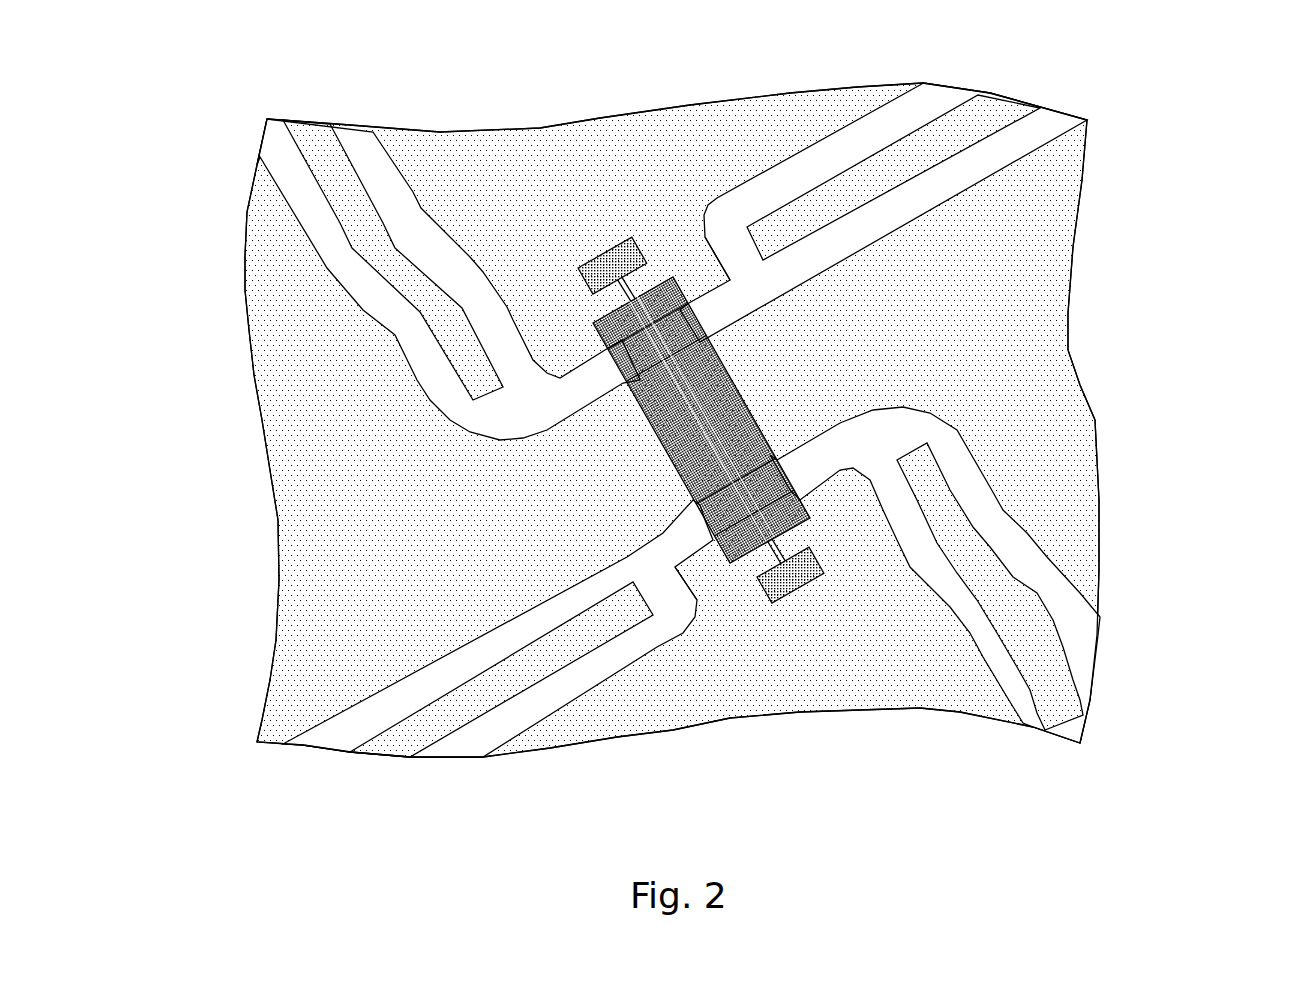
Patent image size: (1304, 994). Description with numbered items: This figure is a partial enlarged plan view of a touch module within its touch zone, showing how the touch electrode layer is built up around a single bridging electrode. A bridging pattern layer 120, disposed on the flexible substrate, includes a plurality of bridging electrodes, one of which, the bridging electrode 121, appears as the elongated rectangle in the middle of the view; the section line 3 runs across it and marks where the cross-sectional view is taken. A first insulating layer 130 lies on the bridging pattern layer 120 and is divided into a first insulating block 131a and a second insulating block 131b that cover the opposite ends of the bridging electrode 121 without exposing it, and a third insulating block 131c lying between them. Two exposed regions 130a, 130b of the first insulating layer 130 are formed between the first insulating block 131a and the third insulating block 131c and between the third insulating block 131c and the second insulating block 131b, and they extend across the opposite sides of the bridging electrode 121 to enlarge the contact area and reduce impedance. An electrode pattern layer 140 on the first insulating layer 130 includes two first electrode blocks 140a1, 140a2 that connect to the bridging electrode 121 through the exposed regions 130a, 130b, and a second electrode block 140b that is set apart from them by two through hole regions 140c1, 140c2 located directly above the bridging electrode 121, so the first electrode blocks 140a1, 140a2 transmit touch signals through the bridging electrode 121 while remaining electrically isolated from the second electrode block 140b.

The line 3- 3 is at (594, 231).
The bridging pattern layer 120 is at (756, 420).
The bridging electrode 121 is at (708, 395).
The first insulating layer 130 is at (626, 421).
The exposed region 130a is at (603, 304).
The exposed region 130b is at (802, 537).
The first insulating block 131a is at (579, 268).
The second insulating block 131b is at (797, 607).
The third insulating block 131c is at (705, 366).
The electrode pattern layer 140 is at (628, 437).
The first electrode block 140a1 is at (647, 142).
The first electrode block 140a2 is at (760, 702).
The second electrode block 140b is at (1057, 328).
The through hole region 140c1 is at (717, 294).
The through hole region 140c2 is at (687, 545).